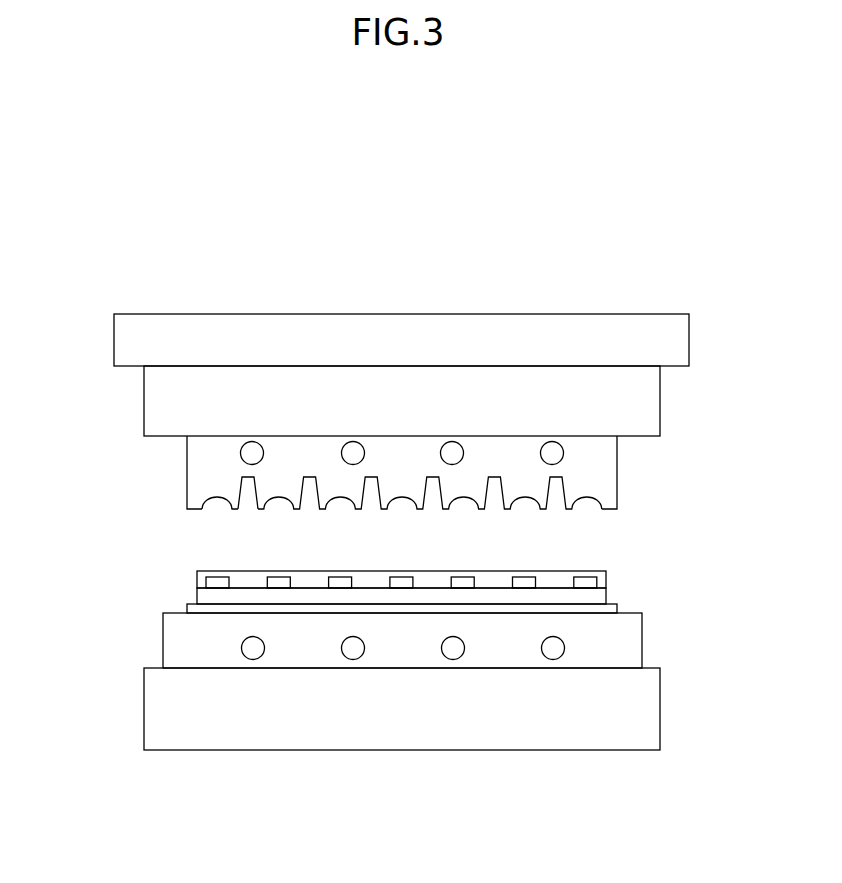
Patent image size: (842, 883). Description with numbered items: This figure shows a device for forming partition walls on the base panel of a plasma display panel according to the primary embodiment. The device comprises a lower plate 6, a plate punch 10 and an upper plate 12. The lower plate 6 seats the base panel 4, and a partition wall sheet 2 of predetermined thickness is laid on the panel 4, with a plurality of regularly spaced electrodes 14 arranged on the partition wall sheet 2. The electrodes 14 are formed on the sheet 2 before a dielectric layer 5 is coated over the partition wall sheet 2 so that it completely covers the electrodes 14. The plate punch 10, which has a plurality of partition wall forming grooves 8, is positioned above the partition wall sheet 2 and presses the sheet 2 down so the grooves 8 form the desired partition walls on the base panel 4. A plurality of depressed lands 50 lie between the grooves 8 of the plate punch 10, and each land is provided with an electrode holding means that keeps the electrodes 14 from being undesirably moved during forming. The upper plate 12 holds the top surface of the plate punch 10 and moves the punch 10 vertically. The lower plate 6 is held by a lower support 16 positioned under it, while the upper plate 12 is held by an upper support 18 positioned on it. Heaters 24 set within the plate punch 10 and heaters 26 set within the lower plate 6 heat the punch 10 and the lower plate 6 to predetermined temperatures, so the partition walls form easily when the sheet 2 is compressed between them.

The partition wall sheet 2 is at (603, 595).
The base panel 4 is at (618, 604).
The dielectric layer 5 is at (549, 580).
The lower plate 6 is at (627, 643).
The partition wall forming grooves 8 is at (253, 508).
The plate punch 10 is at (337, 518).
The upper plate 12 is at (648, 403).
The electrodes 14 is at (585, 578).
The lower support 16 is at (648, 718).
The upper support 18 is at (623, 335).
The heaters 24 is at (452, 441).
The heaters 26 is at (353, 652).
The depressed lands 50 is at (329, 538).